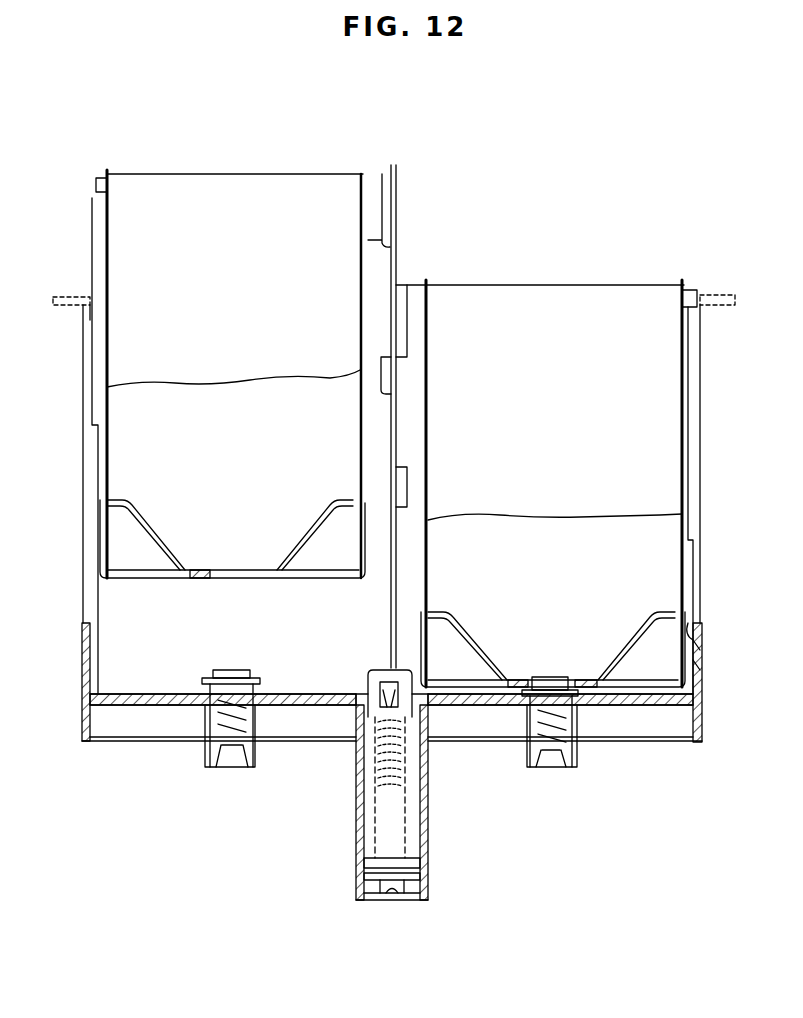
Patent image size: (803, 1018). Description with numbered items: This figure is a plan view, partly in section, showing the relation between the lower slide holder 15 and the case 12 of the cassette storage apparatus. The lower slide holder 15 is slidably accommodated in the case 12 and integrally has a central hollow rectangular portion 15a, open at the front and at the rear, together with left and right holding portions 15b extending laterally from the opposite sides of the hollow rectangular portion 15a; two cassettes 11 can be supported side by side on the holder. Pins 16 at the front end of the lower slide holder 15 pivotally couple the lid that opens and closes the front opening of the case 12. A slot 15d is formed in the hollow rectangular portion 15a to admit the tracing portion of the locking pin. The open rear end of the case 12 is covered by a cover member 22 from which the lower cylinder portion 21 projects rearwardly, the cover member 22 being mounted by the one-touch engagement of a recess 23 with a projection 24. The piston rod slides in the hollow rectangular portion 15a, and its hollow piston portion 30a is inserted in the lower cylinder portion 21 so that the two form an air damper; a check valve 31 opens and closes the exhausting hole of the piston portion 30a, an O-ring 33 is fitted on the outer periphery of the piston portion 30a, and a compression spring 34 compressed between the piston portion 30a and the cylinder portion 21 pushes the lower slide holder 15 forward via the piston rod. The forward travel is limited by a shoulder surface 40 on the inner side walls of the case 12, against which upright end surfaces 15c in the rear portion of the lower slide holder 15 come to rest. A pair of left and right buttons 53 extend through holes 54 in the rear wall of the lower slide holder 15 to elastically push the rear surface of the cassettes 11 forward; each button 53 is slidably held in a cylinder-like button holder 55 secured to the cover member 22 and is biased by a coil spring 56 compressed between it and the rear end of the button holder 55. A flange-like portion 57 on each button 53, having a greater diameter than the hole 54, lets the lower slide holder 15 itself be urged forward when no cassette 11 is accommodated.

The cassette 11 is at (250, 392).
The case 12 is at (693, 566).
The lower slide holder 15 is at (695, 430).
The central hollow rectangular portion 15a is at (380, 281).
The holding portions 15b is at (126, 232).
The upright end surfaces 15c is at (98, 504).
The slot 15d is at (383, 393).
The pins 16 is at (96, 185).
The lower cylinder portion 21 is at (430, 848).
The cover member 22 is at (486, 712).
The recess 23 is at (700, 640).
The projection 24 is at (699, 656).
The hollow piston portion 30a is at (428, 818).
The check valve 31 is at (384, 683).
The O-ring 33 is at (428, 868).
The compression spring 34 is at (428, 783).
The shoulder surface 40 is at (112, 497).
The buttons 53 is at (218, 670).
The holes 54 is at (222, 572).
The button holder 55 is at (234, 770).
The coil spring 56 is at (255, 745).
The flange-like portion 57 is at (205, 680).